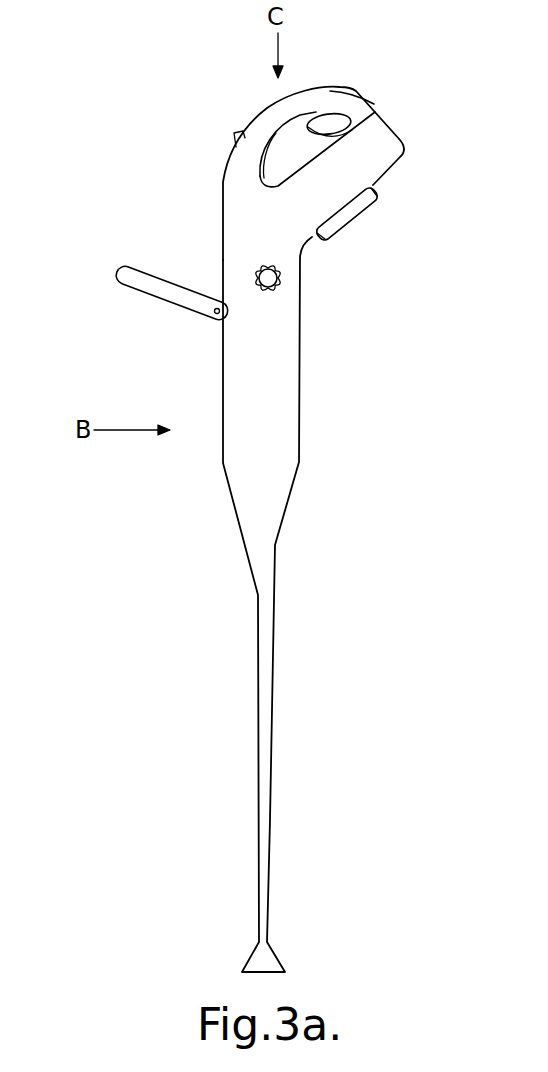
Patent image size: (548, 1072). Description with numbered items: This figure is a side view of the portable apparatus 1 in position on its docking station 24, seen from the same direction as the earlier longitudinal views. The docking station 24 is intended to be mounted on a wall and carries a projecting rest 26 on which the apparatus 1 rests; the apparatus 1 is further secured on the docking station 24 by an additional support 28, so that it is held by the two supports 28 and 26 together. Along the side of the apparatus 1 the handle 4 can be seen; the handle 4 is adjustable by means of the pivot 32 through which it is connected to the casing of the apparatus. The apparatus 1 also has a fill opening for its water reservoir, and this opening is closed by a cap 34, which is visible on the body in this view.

The portable apparatus 1 is at (292, 500).
The handle 4 is at (133, 284).
The docking station 24 is at (355, 82).
The projecting rest 26 is at (342, 215).
The additional support 28 is at (343, 123).
The pivot 32 is at (215, 313).
The cap 34 is at (272, 283).